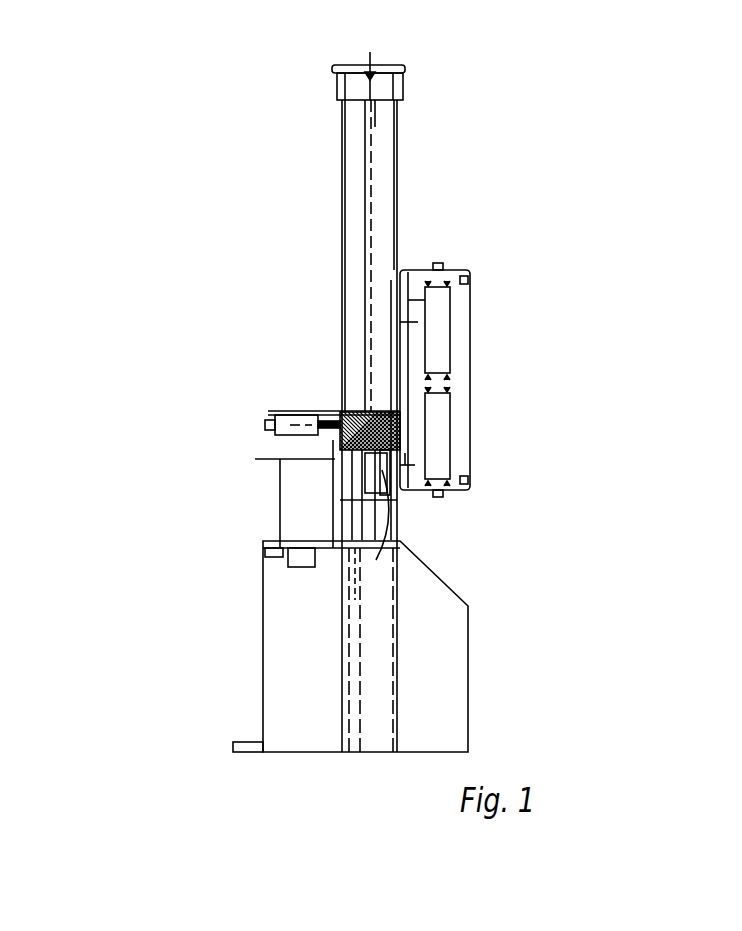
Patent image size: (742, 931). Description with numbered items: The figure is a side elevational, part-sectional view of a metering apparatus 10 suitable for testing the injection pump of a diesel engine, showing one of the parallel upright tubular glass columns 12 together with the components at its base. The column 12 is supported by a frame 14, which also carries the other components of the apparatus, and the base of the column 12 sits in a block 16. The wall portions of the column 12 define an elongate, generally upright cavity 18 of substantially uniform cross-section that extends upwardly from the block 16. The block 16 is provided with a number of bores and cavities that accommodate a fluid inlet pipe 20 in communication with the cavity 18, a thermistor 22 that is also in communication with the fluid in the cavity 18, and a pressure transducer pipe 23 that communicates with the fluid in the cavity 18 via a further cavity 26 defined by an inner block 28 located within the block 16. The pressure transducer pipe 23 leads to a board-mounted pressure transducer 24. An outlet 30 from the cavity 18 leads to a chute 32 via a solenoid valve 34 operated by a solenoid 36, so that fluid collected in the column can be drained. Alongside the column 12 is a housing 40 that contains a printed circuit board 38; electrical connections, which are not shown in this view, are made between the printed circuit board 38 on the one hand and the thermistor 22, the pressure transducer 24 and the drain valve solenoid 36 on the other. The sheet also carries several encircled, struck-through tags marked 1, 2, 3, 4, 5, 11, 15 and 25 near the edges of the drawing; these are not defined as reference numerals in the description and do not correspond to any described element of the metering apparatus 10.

The metering apparatus 10 is at (587, 481).
The tubular glass column 12 is at (367, 194).
The frame 14 is at (340, 310).
The block 16 is at (338, 440).
The cavity 18 is at (370, 213).
The fluid inlet pipe 20 is at (390, 428).
The thermistor 22 is at (390, 413).
The pressure transducer pipe 23 is at (372, 575).
The pressure transducer 24 is at (380, 450).
The reference tag 25 is at (718, 132).
The further cavity 26 is at (335, 468).
The inner block 28 is at (380, 428).
The outlet 30 is at (340, 513).
The chute 32 is at (332, 460).
The solenoid valve 34 is at (347, 411).
The solenoid 36 is at (287, 410).
The printed circuit board 38 is at (433, 335).
The housing 40 is at (465, 288).
The reference tag 1 is at (425, 632).
The reference tag 2 is at (413, 502).
The reference tag 3 is at (415, 558).
The reference tag 4 is at (335, 466).
The reference tag 5 is at (400, 82).
The reference tag 11 is at (377, 233).
The reference tag 15 is at (555, 392).